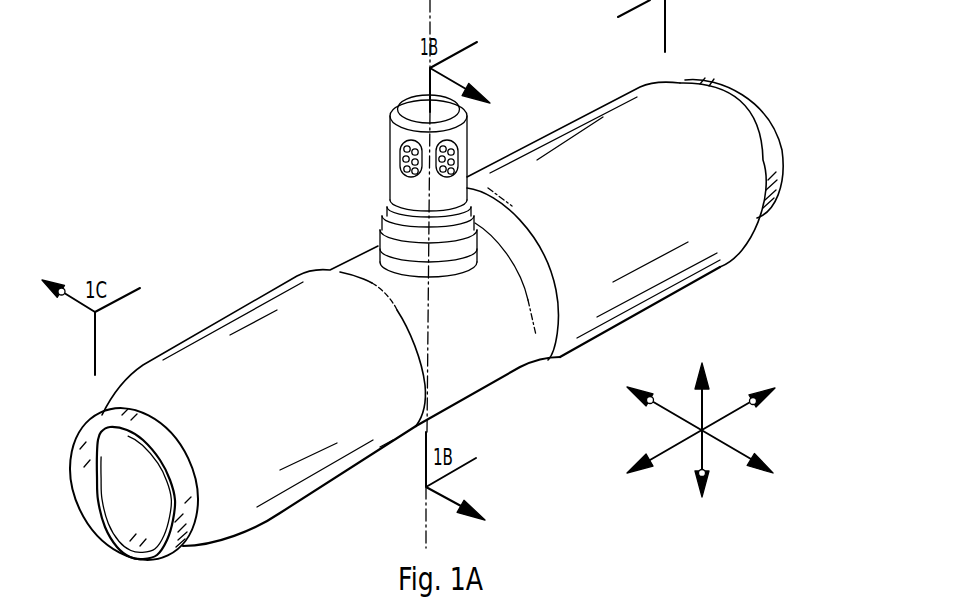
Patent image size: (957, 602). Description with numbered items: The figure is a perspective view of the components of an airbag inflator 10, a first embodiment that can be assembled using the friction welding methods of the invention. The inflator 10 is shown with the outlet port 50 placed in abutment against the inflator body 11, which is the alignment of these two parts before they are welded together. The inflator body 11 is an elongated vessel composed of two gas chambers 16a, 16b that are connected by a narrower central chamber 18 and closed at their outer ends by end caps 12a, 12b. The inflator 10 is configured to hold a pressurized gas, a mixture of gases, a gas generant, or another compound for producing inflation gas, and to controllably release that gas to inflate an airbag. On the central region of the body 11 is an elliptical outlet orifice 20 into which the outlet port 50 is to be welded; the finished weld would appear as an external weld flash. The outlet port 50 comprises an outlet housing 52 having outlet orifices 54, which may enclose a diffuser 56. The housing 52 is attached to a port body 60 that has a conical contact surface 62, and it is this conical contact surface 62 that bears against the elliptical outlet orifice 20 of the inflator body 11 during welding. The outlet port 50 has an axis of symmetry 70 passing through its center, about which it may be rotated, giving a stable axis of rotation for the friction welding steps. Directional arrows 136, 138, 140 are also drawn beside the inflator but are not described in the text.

The airbag inflator 10 is at (215, 258).
The inflator body 11 is at (488, 408).
The end cap 12a is at (748, 112).
The end cap 12b is at (192, 500).
The gas chamber 16a is at (720, 262).
The gas chamber 16b is at (297, 448).
The central chamber 18 is at (478, 388).
The elliptical outlet orifice 20 is at (460, 267).
The outlet port 50 is at (362, 165).
The outlet housing 52 is at (410, 103).
The outlet orifices 54 is at (460, 155).
The diffuser 56 is at (400, 155).
The port body 60 is at (384, 218).
The conical contact surface 62 is at (460, 266).
The axis of symmetry 70 is at (427, 533).
The vertical axis arrow 136 is at (698, 400).
The first lateral axis arrow 138 is at (738, 403).
The second lateral axis arrow 140 is at (737, 448).